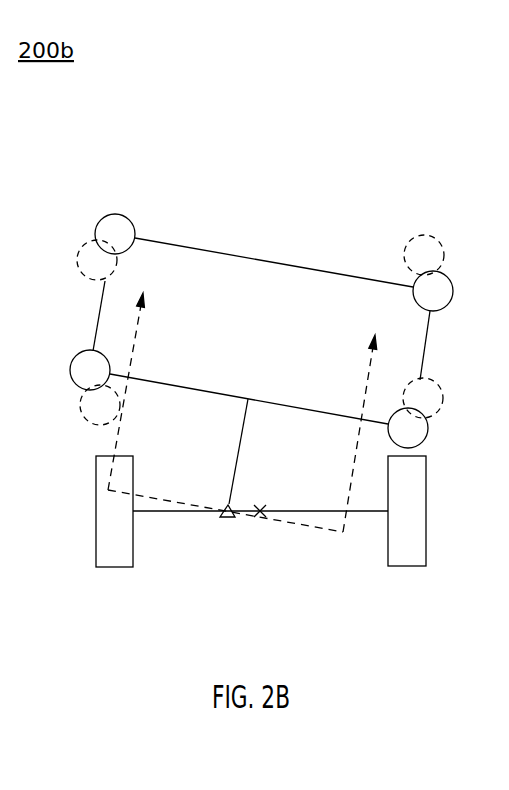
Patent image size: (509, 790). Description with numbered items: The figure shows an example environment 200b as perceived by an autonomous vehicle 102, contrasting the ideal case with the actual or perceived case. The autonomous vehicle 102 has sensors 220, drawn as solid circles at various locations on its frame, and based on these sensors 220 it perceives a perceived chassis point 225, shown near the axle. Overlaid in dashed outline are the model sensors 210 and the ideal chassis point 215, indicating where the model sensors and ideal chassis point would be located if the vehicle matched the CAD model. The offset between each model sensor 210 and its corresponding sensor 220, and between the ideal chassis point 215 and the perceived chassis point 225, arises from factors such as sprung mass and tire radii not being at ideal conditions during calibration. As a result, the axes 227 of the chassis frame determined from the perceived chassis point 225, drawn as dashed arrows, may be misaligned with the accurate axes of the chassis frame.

The example environment 200b is at (256, 370).
The autonomous vehicle 102 is at (261, 331).
The model sensors 210 is at (83, 249).
The sensors 220 is at (123, 228).
The ideal chassis point 215 is at (266, 510).
The perceived chassis point 225 is at (229, 519).
The axes of the chassis frame 227 is at (345, 489).